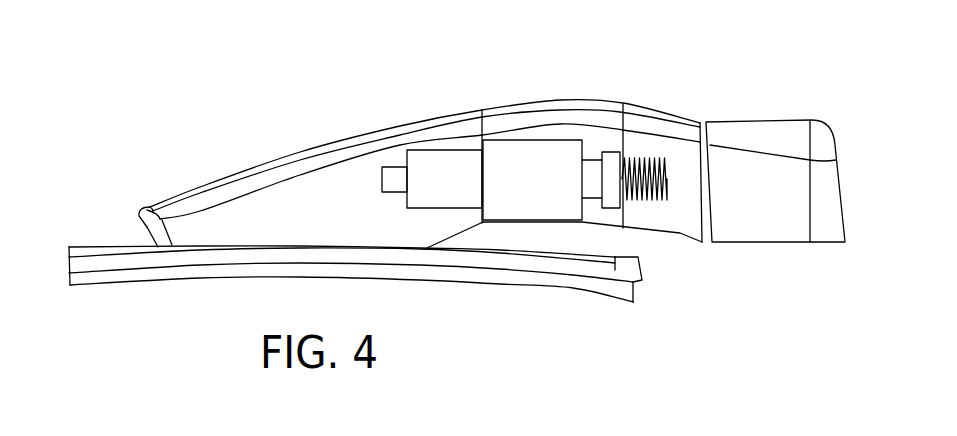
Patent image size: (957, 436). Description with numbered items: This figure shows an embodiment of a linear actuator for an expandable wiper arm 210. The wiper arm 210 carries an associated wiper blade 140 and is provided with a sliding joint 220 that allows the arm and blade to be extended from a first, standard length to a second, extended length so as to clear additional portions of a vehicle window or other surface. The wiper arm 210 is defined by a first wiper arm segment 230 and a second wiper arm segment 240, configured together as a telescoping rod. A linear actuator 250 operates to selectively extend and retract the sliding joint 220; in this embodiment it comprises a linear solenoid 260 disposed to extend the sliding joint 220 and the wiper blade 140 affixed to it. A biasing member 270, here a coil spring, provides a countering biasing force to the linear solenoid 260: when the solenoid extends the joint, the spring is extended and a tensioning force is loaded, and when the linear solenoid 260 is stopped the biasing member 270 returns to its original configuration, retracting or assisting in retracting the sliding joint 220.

The wiper blade 140 is at (115, 242).
The expandable wiper arm 210 is at (846, 153).
The sliding joint 220 is at (709, 60).
The first wiper arm segment 230 is at (317, 150).
The second wiper arm segment 240 is at (783, 132).
The linear actuator 250 is at (562, 224).
The linear solenoid 260 is at (551, 192).
The biasing member 270 is at (643, 160).